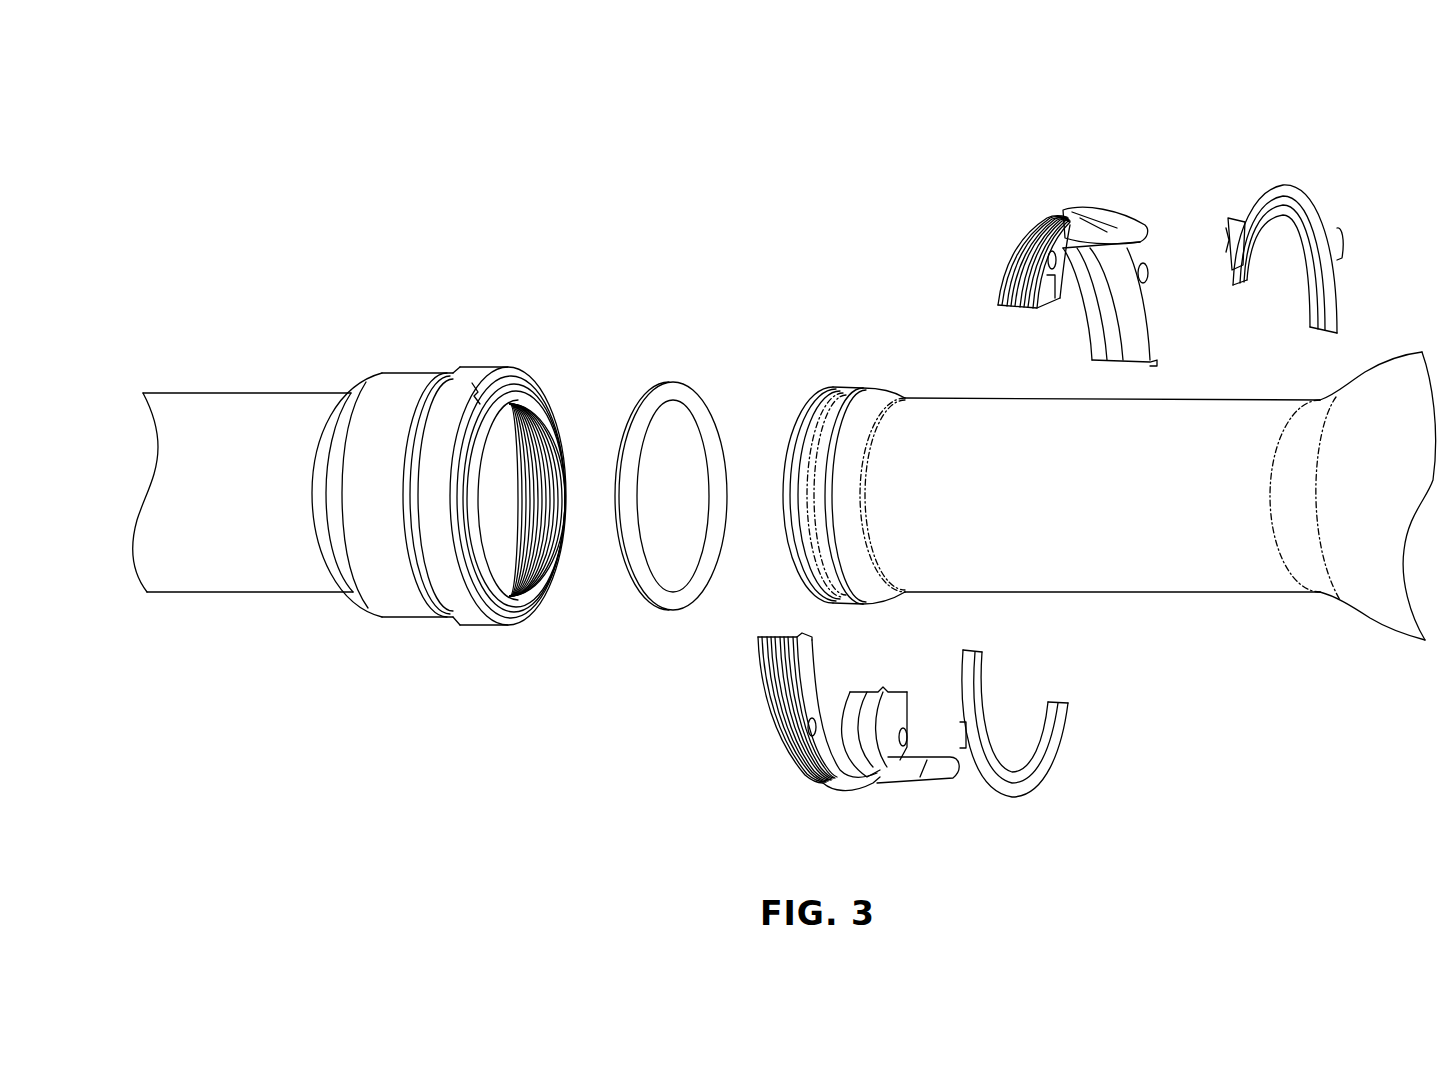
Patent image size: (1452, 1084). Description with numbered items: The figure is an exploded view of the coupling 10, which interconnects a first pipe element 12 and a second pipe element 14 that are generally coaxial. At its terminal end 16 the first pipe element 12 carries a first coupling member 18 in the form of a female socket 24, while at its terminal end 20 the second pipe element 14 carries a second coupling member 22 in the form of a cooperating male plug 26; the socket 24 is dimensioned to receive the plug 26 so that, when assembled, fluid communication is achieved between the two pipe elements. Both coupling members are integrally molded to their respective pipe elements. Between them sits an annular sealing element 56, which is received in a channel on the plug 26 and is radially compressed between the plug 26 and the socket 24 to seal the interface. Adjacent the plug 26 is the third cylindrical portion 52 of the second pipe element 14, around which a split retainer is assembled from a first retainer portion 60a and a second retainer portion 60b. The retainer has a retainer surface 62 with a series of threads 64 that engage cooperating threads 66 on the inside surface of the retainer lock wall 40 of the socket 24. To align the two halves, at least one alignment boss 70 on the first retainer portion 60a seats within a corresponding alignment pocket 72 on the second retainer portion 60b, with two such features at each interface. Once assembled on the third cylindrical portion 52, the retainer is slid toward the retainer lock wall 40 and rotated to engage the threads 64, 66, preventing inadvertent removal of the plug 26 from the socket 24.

The coupling 10 is at (844, 172).
The first pipe element 12 is at (210, 415).
The second pipe element 14 is at (1148, 519).
The terminal end 16 is at (520, 496).
The first coupling member 18 is at (395, 442).
The female socket 24 is at (460, 370).
The terminal end 20 is at (812, 393).
The second coupling member 22 is at (875, 440).
The male plug 26 is at (864, 390).
The retainer lock wall 40 is at (470, 625).
The third cylindrical portion 52 is at (1082, 511).
The annular sealing element 56 is at (680, 392).
The first retainer portion 60a is at (878, 686).
The second retainer portion 60b is at (1115, 252).
The retainer surface 62 is at (840, 502).
The threads 64 is at (1020, 232).
The threads 66 is at (545, 598).
The alignment boss 70 is at (805, 634).
The alignment pocket 72 is at (1047, 310).